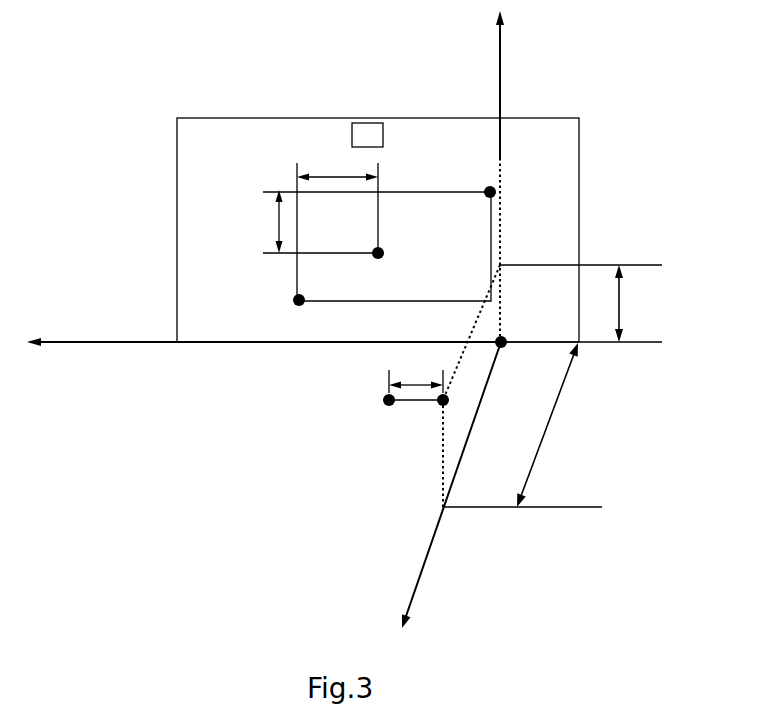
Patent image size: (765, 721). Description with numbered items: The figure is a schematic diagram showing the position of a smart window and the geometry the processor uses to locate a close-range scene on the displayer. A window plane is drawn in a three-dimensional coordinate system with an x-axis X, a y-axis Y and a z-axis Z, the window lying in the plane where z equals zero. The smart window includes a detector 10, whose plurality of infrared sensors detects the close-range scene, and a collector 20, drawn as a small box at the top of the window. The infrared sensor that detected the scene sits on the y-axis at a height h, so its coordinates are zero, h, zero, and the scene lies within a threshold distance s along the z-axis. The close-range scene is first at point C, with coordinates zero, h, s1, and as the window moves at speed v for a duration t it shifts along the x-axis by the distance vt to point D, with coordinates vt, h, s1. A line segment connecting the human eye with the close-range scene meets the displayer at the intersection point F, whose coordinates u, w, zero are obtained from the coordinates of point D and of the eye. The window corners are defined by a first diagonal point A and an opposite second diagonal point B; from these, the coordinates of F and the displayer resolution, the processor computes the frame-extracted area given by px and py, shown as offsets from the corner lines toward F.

The detector 10 is at (500, 178).
The collector 20 is at (371, 123).
The first diagonal point of the window A is at (288, 303).
The second diagonal point of the window B is at (482, 181).
The initial position of the close-range scene C is at (453, 401).
The moved position of the close-range scene D is at (379, 404).
The intersection point F is at (388, 255).
The x-axis X is at (344, 358).
The y-axis Y is at (509, 85).
The z-axis Z is at (437, 485).
The height of the infrared sensor h is at (581, 303).
The threshold distance s is at (547, 425).
The horizontal coordinate of the frame-extracted area px is at (337, 167).
The vertical coordinate of the frame-extracted area py is at (266, 221).
The moving distance of the smart window vt is at (416, 376).